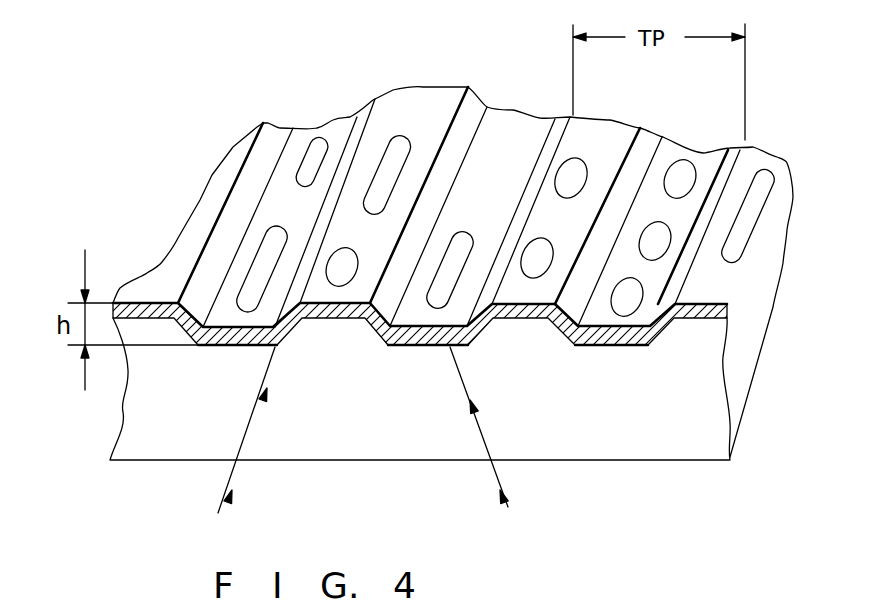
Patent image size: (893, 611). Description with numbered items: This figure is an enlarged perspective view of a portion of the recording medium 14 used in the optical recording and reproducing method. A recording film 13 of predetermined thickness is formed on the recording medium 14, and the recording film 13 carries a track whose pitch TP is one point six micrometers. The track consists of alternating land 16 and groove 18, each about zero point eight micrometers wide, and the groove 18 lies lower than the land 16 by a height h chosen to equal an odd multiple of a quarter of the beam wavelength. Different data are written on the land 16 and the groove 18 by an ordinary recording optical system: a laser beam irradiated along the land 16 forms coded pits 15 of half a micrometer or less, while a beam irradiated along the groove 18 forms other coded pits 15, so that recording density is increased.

The recording film 13 is at (720, 315).
The recording medium 14 is at (697, 400).
The pits 15 is at (307, 143).
The land 16 is at (537, 207).
The groove 18 is at (653, 207).